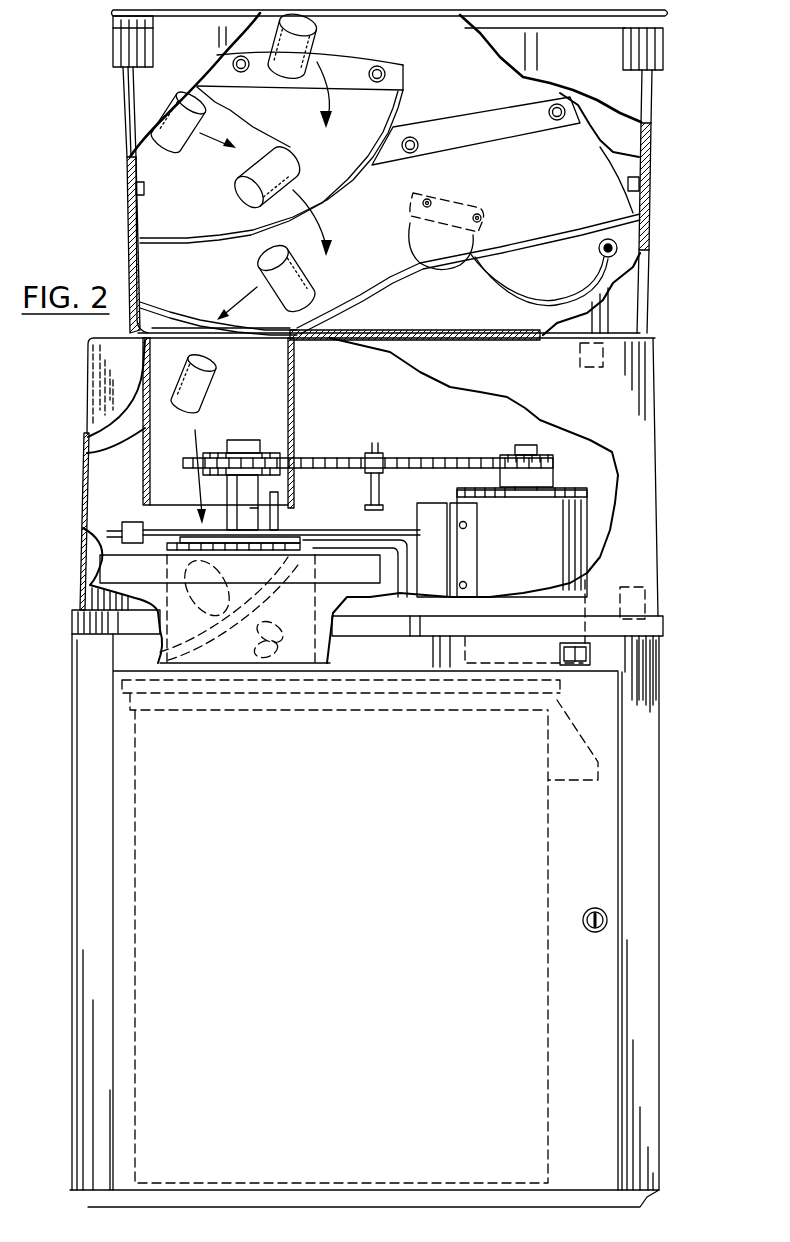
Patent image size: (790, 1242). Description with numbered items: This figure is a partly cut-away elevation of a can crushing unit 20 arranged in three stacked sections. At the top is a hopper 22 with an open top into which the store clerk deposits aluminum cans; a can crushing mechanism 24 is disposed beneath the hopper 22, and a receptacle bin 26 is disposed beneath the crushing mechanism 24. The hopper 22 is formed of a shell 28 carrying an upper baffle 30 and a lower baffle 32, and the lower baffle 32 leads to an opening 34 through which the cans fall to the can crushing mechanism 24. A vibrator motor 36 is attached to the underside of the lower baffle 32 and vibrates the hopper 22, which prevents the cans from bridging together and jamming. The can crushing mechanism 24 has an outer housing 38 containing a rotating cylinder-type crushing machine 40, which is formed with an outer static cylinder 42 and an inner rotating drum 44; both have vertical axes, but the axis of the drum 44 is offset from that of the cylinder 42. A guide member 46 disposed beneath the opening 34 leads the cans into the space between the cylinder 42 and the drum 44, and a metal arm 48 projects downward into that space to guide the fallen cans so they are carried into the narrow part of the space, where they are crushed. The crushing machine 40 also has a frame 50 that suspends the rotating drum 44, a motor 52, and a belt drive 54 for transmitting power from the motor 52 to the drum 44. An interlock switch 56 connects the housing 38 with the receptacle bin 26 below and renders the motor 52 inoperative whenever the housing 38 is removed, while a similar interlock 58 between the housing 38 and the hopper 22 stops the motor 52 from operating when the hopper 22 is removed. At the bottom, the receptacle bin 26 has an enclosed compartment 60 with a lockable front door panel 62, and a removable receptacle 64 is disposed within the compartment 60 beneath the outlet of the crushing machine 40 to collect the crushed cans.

The can crushing unit 20 is at (113, 240).
The hopper 22 is at (658, 182).
The can crushing mechanism 24 is at (679, 506).
The receptacle bin 26 is at (672, 759).
The shell 28 is at (637, 97).
The upper baffle 30 is at (387, 108).
The lower baffle 32 is at (517, 143).
The opening 34 is at (228, 287).
The vibrator motor 36 is at (460, 263).
The outer housing 38 is at (657, 400).
The rotating cylinder-type crushing machine 40 is at (158, 523).
The outer static cylinder 42 is at (83, 530).
The inner rotating drum 44 is at (180, 565).
The guide member 46 is at (87, 452).
The metal arm 48 is at (250, 605).
The frame 50 is at (403, 508).
The motor 52 is at (583, 517).
The belt drive 54 is at (341, 457).
The interlock switch 56 is at (645, 597).
The interlock 58 is at (583, 352).
The enclosed compartment 60 is at (578, 1001).
The lockable front door panel 62 is at (607, 871).
The removable receptacle 64 is at (160, 950).